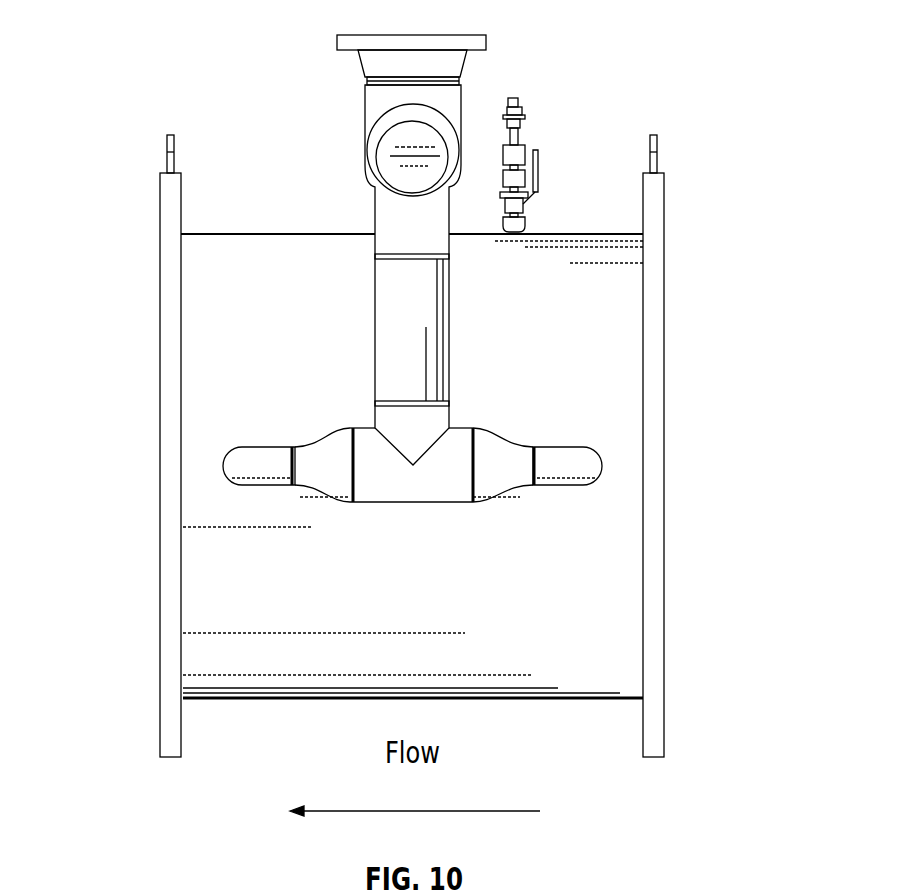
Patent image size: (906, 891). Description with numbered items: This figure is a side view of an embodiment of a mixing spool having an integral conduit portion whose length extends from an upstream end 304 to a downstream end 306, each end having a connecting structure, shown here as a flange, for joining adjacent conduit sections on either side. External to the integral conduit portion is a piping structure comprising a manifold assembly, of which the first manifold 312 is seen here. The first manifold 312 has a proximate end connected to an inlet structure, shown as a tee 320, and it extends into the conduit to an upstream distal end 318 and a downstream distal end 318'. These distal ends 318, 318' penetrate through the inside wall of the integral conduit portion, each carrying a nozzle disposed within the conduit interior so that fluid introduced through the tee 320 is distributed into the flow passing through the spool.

The upstream end 304 is at (665, 220).
The downstream end 306 is at (158, 238).
The first manifold 312 is at (416, 518).
The upstream distal end 318 is at (581, 425).
The downstream distal end 318' is at (259, 425).
The tee 320 is at (462, 66).